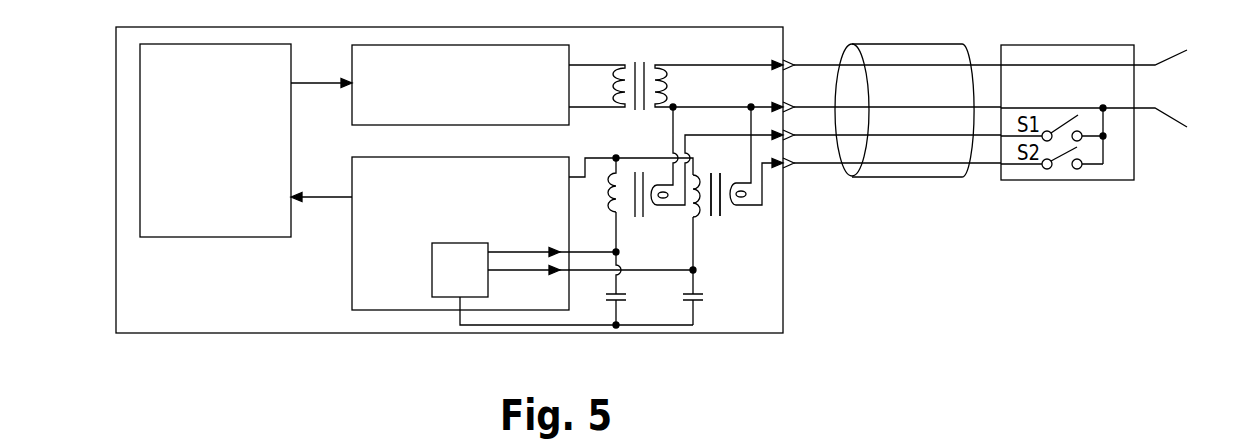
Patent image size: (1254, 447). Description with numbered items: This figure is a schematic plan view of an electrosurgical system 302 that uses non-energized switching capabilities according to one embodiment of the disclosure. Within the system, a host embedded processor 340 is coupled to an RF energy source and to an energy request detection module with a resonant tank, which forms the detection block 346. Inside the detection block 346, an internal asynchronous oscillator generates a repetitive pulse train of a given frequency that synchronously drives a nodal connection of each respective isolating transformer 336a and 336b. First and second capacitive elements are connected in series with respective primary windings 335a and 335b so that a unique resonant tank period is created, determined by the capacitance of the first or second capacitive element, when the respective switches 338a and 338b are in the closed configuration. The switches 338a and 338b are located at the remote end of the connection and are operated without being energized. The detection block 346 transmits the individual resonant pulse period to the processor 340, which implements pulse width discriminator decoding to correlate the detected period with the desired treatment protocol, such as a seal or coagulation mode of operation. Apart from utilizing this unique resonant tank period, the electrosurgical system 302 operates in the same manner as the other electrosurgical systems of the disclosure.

The electrosurgical system 302 is at (104, 25).
The processor 340 is at (245, 238).
The detection block 346 is at (405, 310).
The primary winding 335a is at (604, 219).
The isolating transformer 336a is at (631, 217).
The primary winding 335b is at (688, 218).
The isolating transformer 336b is at (723, 220).
The switch 338a is at (1069, 108).
The switch 338b is at (1066, 174).